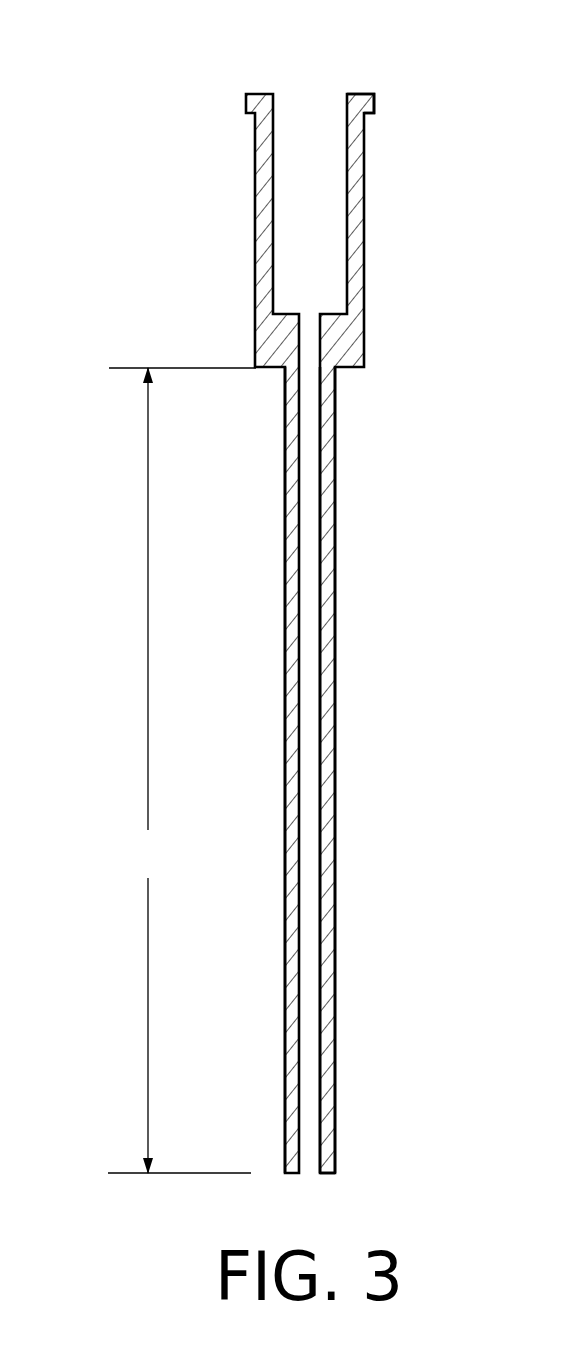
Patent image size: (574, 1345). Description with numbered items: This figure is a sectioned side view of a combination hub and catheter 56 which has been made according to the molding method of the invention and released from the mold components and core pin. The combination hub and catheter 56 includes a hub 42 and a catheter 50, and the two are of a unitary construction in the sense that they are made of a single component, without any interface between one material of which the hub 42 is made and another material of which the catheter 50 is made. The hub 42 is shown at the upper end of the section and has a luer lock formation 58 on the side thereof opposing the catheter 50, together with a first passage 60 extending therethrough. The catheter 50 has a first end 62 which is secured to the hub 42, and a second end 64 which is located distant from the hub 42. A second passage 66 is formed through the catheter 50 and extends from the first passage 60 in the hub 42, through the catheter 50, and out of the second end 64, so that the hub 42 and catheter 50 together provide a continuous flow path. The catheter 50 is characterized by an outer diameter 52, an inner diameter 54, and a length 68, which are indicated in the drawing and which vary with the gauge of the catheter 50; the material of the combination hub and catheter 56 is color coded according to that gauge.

The combination hub and catheter 56 is at (106, 98).
The luer lock formation 58 is at (374, 100).
The hub 42 is at (263, 195).
The first passage 60 is at (322, 187).
The first end 62 is at (337, 390).
The outer diameter 52 is at (393, 552).
The inner diameter 54 is at (393, 608).
The second passage 66 is at (310, 662).
The catheter 50 is at (285, 712).
The length 68 is at (182, 770).
The second end 64 is at (335, 1150).